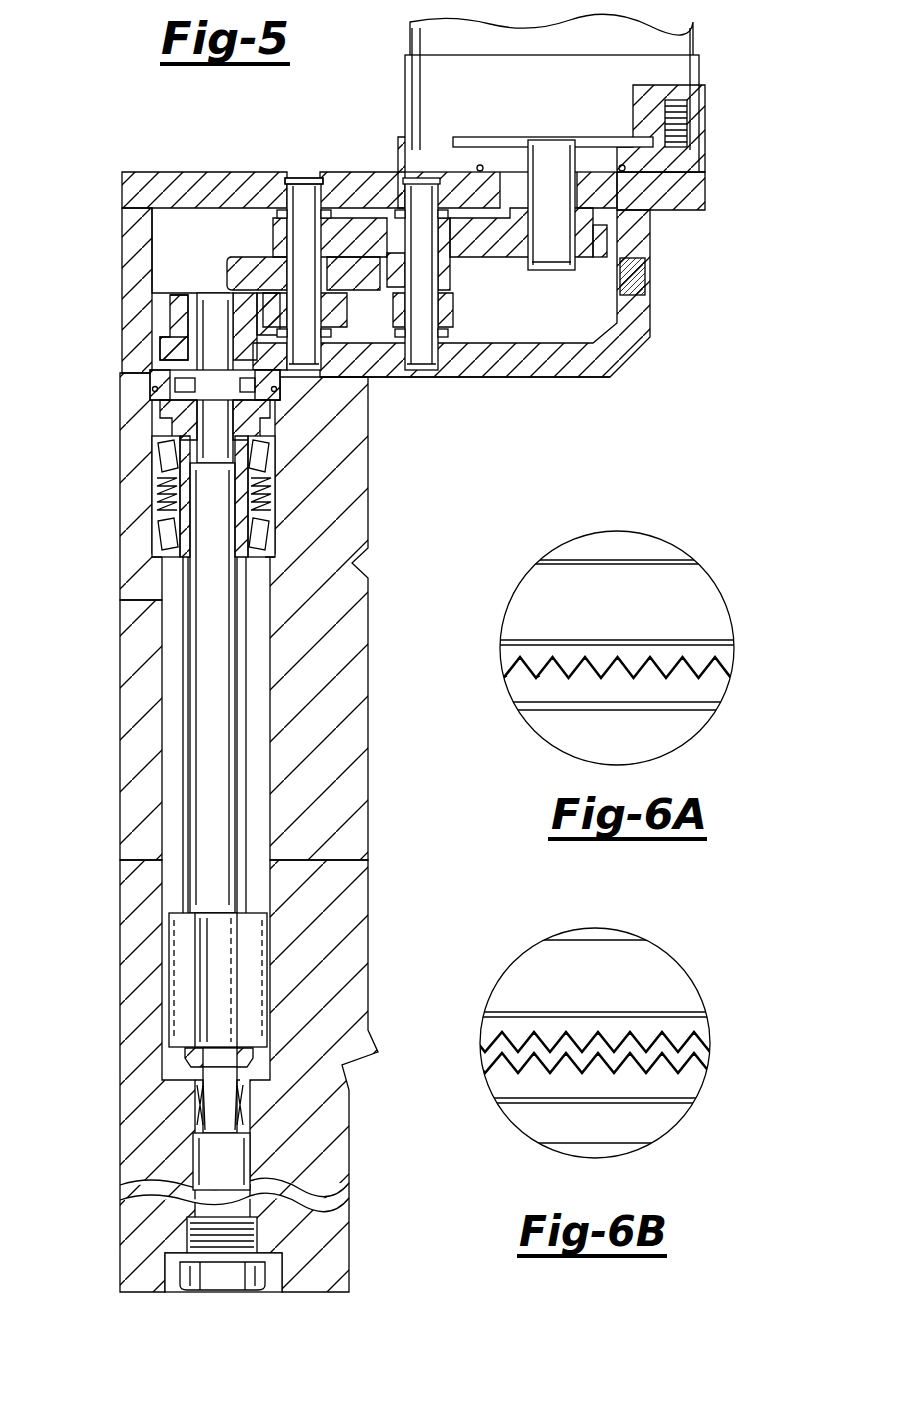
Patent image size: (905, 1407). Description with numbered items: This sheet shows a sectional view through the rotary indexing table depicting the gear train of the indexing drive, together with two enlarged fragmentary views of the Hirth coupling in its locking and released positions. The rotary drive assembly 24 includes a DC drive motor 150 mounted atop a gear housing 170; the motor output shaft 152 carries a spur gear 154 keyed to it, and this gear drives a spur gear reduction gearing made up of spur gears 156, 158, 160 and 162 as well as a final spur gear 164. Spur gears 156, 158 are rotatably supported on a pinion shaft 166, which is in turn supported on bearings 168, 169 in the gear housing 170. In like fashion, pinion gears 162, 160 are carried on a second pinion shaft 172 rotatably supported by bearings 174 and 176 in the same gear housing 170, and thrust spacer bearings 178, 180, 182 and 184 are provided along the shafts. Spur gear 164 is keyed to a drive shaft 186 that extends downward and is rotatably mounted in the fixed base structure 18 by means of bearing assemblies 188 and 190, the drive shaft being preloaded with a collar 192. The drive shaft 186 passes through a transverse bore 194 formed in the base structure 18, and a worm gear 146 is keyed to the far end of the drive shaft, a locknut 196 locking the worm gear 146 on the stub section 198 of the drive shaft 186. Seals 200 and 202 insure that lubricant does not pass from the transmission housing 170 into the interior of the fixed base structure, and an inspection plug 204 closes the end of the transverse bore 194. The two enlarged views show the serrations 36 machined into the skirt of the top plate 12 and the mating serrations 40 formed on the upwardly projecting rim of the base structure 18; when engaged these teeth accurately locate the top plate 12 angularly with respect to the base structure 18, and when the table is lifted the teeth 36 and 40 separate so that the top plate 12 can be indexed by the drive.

In FIG. 6A, the top plate 12 is at (697, 600).
In FIG. 6B, the top plate 12 is at (662, 975).
In FIG. 5, the base structure 18 is at (108, 712).
In FIG. 6A, the base structure 18 is at (694, 727).
In FIG. 6B, the base structure 18 is at (674, 1125).
In FIG. 5, the rotary drive assembly 24 is at (378, 86).
In FIG. 6A, the serrations 36 is at (715, 675).
In FIG. 6B, the serrations 36 is at (695, 1072).
In FIG. 6A, the mating serrations 40 is at (530, 676).
In FIG. 6B, the mating serrations 40 is at (515, 1035).
In FIG. 5, the worm gear 146 is at (173, 951).
In FIG. 5, the DC drive motor 150 is at (645, 53).
In FIG. 5, the output shaft 152 is at (558, 152).
In FIG. 5, the spur gear 154 is at (595, 242).
In FIG. 5, the spur gear 156 is at (336, 230).
In FIG. 5, the spur gear 158 is at (450, 295).
In FIG. 5, the pinion gear 160 is at (372, 290).
In FIG. 5, the pinion gear 162 is at (375, 378).
In FIG. 5, the spur gear 164 is at (163, 300).
In FIG. 5, the pinion shaft 166 is at (402, 122).
In FIG. 5, the bearing 168 is at (452, 350).
In FIG. 5, the bearing 169 is at (403, 185).
In FIG. 5, the gear housing 170 is at (165, 168).
In FIG. 5, the pinion shaft 172 is at (298, 234).
In FIG. 5, the bearing 174 is at (287, 180).
In FIG. 5, the bearing 176 is at (332, 345).
In FIG. 5, the thrust spacer bearing 178 is at (478, 262).
In FIG. 5, the thrust spacer bearing 180 is at (452, 335).
In FIG. 5, the thrust spacer bearing 182 is at (398, 360).
In FIG. 5, the thrust spacer bearing 184 is at (278, 215).
In FIG. 5, the drive shaft 186 is at (190, 623).
In FIG. 5, the bearing assembly 188 is at (152, 532).
In FIG. 5, the bearing assembly 190 is at (193, 1100).
In FIG. 5, the collar 192 is at (165, 420).
In FIG. 5, the transverse bore 194 is at (168, 776).
In FIG. 5, the locknut 196 is at (187, 1056).
In FIG. 5, the stub section 198 is at (220, 933).
In FIG. 5, the seal 200 is at (150, 392).
In FIG. 5, the seal 202 is at (165, 372).
In FIG. 5, the inspection plug 204 is at (223, 1277).